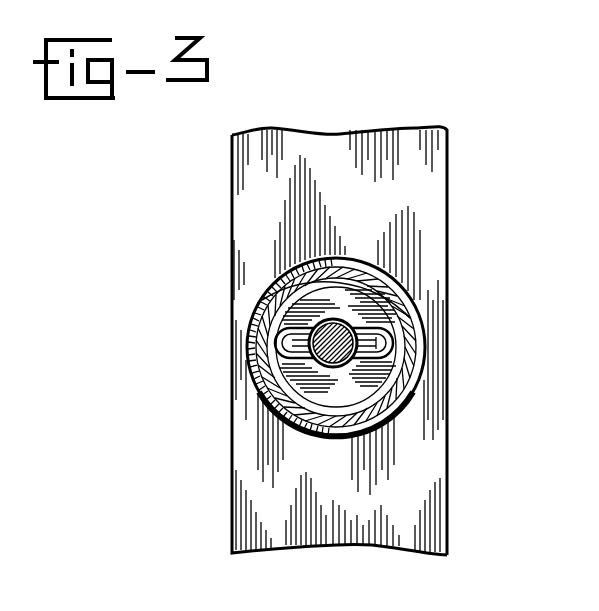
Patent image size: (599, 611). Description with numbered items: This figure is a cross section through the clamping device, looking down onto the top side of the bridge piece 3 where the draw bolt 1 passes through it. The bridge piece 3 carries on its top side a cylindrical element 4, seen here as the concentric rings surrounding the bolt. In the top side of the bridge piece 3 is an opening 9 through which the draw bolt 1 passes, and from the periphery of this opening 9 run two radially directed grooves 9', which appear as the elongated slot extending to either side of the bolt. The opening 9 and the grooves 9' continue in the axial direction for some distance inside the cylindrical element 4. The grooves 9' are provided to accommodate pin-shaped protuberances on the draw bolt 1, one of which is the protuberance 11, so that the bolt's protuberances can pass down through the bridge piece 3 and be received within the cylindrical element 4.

The bridge piece 3 is at (418, 183).
The draw bolt 1 is at (300, 405).
The opening 9 is at (286, 342).
The radially directed grooves 9' is at (328, 347).
The cylindrical element 4 is at (405, 320).
The pin-shaped protuberance 11 is at (398, 346).